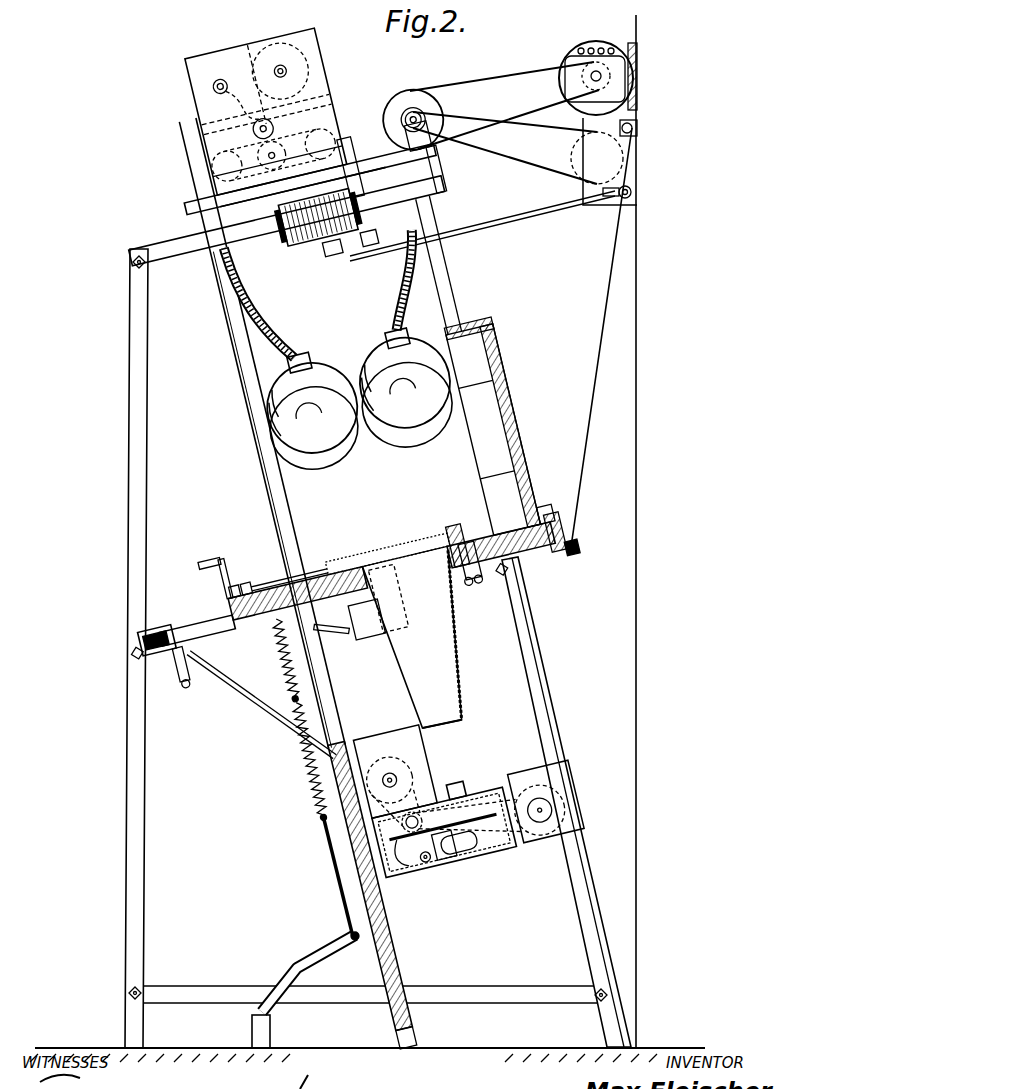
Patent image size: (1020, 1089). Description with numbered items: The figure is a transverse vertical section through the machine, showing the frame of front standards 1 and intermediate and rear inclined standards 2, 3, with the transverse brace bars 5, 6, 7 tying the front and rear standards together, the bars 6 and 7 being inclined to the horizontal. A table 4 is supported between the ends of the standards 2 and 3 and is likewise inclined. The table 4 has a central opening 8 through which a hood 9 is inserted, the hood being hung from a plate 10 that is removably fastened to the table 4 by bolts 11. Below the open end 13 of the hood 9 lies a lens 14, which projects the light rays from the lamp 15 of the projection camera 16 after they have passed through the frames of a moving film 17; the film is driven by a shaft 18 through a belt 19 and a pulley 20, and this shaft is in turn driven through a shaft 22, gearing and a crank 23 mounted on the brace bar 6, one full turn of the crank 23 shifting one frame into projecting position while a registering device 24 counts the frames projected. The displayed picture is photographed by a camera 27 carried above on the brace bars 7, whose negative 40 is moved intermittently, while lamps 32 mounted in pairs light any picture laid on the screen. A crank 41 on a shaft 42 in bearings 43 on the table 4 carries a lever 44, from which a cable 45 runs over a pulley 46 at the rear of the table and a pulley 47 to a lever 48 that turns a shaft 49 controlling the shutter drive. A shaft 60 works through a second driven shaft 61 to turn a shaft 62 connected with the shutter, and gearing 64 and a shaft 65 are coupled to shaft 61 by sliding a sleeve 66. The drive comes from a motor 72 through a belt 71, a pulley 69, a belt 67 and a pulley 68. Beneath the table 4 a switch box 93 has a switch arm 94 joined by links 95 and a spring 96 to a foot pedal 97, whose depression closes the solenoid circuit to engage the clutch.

The front standards 1 is at (140, 888).
The intermediate inclined standard 2 is at (338, 734).
The rear inclined standard 3 is at (530, 662).
The table 4 is at (522, 558).
The transverse brace bar 5 is at (500, 992).
The transverse brace bar 6 is at (226, 645).
The transverse brace bar 7 is at (178, 258).
The central opening 8 is at (456, 602).
The hood 9 is at (464, 684).
The plate 10 is at (452, 540).
The bolts 11 is at (467, 587).
The open end of hood 13 is at (453, 722).
The lens 14 is at (464, 793).
The lamp 15 is at (466, 855).
The projection camera 16 is at (510, 790).
The moving film 17 is at (402, 862).
The shaft 18 is at (420, 812).
The belt 19 is at (410, 802).
The pulley 20 is at (391, 776).
The shaft 22 is at (280, 727).
The crank 23 is at (184, 686).
The registering device 24 is at (160, 636).
The camera 27 is at (320, 60).
The lamps 32 is at (310, 420).
The negative 40 is at (328, 134).
The crank 41 is at (216, 562).
The shaft 42 is at (270, 583).
The bearings 43 is at (546, 518).
The lever 44 is at (566, 531).
The cable 45 is at (592, 441).
The pulley 46 is at (574, 556).
The pulley 47 is at (634, 128).
The lever 48 is at (585, 130).
The shaft 49 is at (604, 161).
The shaft 60 is at (632, 193).
The second driven shaft 61 is at (494, 222).
The shaft 62 is at (330, 250).
The gearing 64 is at (340, 262).
The shaft 65 is at (365, 252).
The sleeve 66 is at (392, 264).
The belt 67 is at (480, 150).
The pulley 68 is at (432, 122).
The pulley 69 is at (432, 107).
The belt 71 is at (488, 84).
The motor 72 is at (598, 46).
The switch box 93 is at (370, 634).
The switch arm 94 is at (331, 640).
The links 95 is at (295, 692).
The spring 96 is at (320, 797).
The foot pedal 97 is at (318, 960).